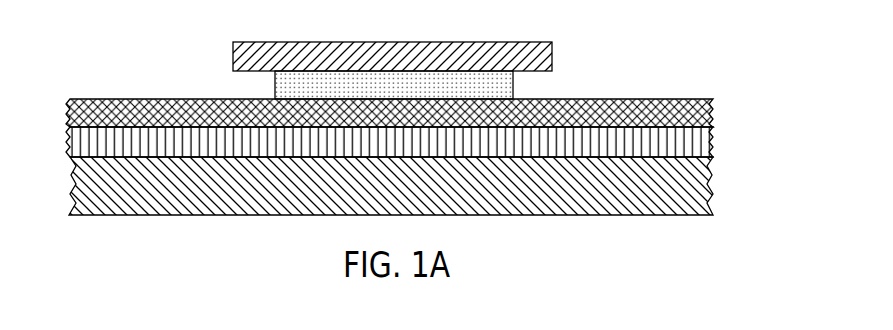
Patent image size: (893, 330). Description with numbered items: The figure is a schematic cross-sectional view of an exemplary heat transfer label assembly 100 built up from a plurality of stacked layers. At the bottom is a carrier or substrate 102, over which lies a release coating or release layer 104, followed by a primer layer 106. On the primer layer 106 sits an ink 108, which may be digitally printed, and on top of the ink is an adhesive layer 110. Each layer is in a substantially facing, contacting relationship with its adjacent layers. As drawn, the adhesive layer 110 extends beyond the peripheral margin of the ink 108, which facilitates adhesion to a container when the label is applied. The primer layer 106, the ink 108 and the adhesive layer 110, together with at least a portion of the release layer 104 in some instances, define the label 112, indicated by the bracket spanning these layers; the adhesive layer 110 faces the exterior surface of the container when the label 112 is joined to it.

The heat transfer label assembly 100 is at (681, 37).
The substrate 102 is at (713, 180).
The release layer 104 is at (713, 142).
The primer layer 106 is at (713, 113).
The ink 108 is at (516, 90).
The adhesive layer 110 is at (555, 57).
The label 112 is at (60, 42).